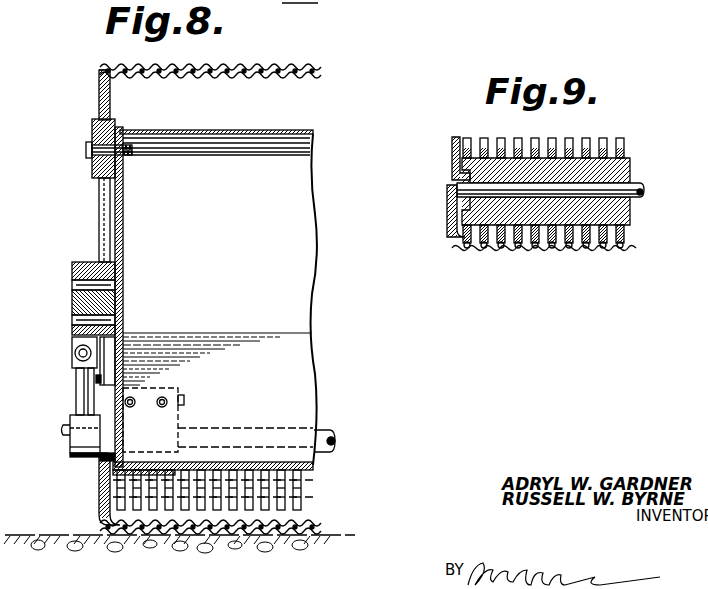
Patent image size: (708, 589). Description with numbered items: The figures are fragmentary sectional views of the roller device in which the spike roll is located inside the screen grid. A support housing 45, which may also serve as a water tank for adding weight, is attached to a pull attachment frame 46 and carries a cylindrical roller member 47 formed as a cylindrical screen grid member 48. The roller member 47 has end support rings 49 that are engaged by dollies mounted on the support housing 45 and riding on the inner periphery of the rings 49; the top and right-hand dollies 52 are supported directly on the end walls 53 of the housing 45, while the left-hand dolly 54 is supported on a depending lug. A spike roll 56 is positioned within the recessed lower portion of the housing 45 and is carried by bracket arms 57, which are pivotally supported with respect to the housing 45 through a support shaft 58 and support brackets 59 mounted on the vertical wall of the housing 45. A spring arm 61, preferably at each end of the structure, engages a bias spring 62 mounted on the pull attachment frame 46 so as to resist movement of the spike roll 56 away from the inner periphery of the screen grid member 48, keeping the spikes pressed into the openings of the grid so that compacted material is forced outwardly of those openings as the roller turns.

In FIG. 8, the support housing 45 is at (228, 132).
In FIG. 8, the pull attachment frame 46 is at (72, 305).
In FIG. 8, the cylindrical roller member 47 is at (95, 105).
In FIG. 8, the screen grid member 48 is at (250, 65).
In FIG. 8, the end support rings 49 is at (98, 88).
In FIG. 9, the end support rings 49 is at (447, 219).
In FIG. 8, the dollies 52 is at (92, 130).
In FIG. 8, the end walls 53 is at (118, 210).
In FIG. 8, the left-hand dolly 54 is at (110, 359).
In FIG. 8, the spike roll 56 is at (310, 497).
In FIG. 9, the spike roll 56 is at (478, 250).
In FIG. 8, the bracket arms 57 is at (98, 460).
In FIG. 9, the bracket arms 57 is at (452, 165).
In FIG. 8, the support shaft 58 is at (64, 440).
In FIG. 8, the support brackets 59 is at (180, 394).
In FIG. 8, the spring arm 61 is at (76, 399).
In FIG. 8, the bias spring 62 is at (78, 372).